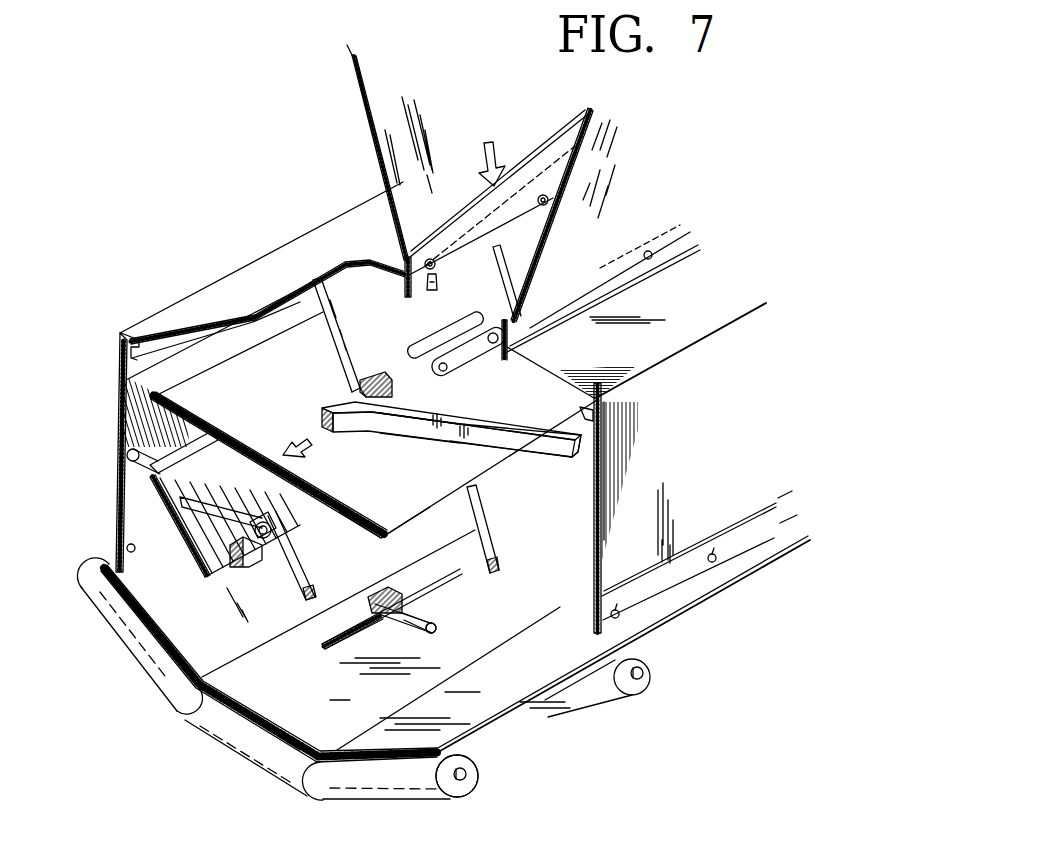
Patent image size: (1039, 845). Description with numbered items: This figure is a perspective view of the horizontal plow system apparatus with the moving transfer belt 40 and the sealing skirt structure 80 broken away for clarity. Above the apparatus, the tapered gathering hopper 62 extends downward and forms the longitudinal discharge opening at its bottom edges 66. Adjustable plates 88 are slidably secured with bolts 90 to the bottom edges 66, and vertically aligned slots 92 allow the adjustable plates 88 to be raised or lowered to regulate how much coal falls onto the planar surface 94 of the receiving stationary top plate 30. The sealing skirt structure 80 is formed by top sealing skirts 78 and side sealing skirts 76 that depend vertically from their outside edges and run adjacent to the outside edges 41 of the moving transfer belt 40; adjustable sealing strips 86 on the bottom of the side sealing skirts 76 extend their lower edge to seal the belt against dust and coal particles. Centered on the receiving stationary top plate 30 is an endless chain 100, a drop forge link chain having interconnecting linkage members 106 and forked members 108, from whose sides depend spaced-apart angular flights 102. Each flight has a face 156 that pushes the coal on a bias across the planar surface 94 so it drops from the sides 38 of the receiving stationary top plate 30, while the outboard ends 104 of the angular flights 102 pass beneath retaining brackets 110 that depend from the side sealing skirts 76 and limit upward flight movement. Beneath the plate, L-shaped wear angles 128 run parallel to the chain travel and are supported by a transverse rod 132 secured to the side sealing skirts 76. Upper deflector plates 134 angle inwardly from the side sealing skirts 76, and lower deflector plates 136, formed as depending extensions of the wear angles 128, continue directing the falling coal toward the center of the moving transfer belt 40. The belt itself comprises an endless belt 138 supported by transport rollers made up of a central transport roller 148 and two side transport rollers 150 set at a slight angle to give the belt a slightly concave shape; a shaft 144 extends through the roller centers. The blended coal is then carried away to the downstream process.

The tapered gathering hopper 62 is at (360, 100).
The adjustable plates 88 is at (489, 227).
The bolts 90 is at (430, 259).
The vertically aligned slots 92 is at (433, 289).
The top sealing skirts 78 is at (602, 364).
The side sealing skirts 76 is at (657, 491).
The sealing skirt structure 80 is at (640, 424).
The adjustable sealing strips 86 is at (683, 570).
The outside edges of the moving transfer belt 41 is at (632, 647).
The endless belt 138 is at (473, 722).
The central transport roller 148 is at (256, 752).
The moving transfer belt 40 is at (273, 743).
The side transport rollers 150 is at (143, 648).
The shaft 144 is at (468, 776).
The planar surface 94 is at (410, 502).
The receiving stationary top plate 30 is at (388, 537).
The upper deflector plates 134 is at (124, 388).
The retaining brackets 110 is at (124, 350).
The angular flights 102 is at (327, 332).
The forked members 108 is at (372, 377).
The bottom edges 66 is at (375, 353).
The endless chain 100 is at (338, 386).
The face 156 is at (427, 427).
The interconnecting linkage members 106 is at (465, 355).
The wear angles 128 is at (144, 470).
The lower deflector plates 136 is at (167, 523).
The rod 132 is at (420, 634).
The outboard ends 104 is at (258, 557).
The sides 38 is at (497, 485).